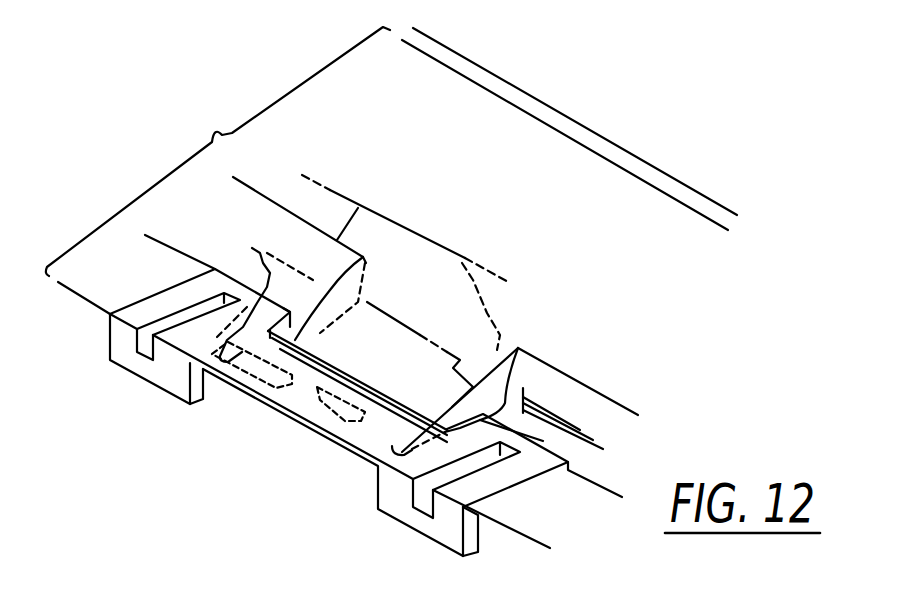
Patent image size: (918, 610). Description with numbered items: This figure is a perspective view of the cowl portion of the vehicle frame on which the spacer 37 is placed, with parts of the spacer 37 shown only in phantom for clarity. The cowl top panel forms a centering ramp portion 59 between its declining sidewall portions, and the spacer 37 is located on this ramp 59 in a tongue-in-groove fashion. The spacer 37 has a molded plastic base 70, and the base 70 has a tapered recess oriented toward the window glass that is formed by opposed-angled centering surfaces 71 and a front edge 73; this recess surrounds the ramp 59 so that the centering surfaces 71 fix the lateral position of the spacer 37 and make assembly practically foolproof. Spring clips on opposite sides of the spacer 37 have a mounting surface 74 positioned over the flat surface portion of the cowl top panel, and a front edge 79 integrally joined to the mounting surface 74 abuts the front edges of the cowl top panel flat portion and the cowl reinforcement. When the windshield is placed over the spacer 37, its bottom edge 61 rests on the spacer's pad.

The spacer 37 is at (333, 173).
The centering ramp portion 59 is at (497, 352).
The bottom edge of the windshield 61 is at (347, 214).
The base 70 is at (247, 398).
The centering surfaces 71 is at (296, 342).
The front edge 73 is at (363, 381).
The mounting surface 74 is at (523, 463).
The front edge 79 is at (480, 537).